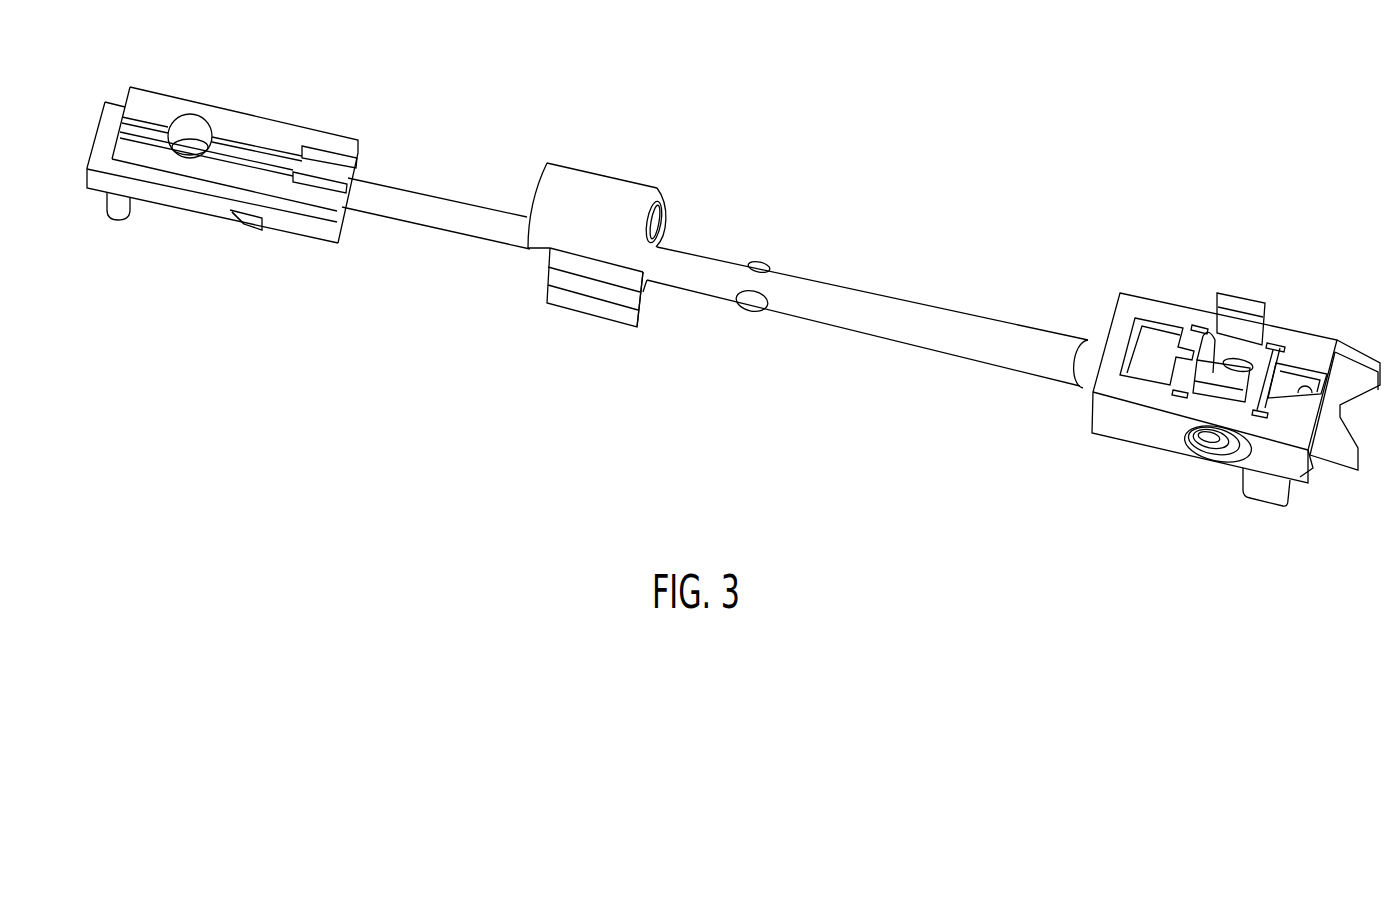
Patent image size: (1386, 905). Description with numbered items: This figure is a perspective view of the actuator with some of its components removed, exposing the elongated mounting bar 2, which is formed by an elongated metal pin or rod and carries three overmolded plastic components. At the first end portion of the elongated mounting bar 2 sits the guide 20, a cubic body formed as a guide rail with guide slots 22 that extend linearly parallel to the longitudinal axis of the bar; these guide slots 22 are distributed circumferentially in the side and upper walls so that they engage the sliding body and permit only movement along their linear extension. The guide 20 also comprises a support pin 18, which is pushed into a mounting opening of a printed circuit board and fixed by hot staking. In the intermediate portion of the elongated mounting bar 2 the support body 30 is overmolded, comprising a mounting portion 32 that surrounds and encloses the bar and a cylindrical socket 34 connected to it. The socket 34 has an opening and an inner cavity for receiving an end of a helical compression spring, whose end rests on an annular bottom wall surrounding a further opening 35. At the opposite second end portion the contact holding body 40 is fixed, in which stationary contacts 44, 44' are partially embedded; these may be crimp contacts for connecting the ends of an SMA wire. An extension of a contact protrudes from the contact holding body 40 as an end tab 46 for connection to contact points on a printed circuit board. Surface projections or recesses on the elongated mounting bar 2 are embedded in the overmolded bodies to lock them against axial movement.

The elongated mounting bar 2 is at (868, 277).
The support pin 18 is at (122, 212).
The guide 20 is at (327, 122).
The guide slots 22 is at (152, 126).
The support body 30 is at (606, 313).
The mounting portion 32 is at (647, 298).
The socket 34 is at (627, 210).
The further opening 35 is at (661, 226).
The contact holding body 40 is at (1217, 402).
The stationary contact 44 is at (1208, 323).
The stationary contact 44' is at (1247, 295).
The end tab 46 is at (1260, 488).